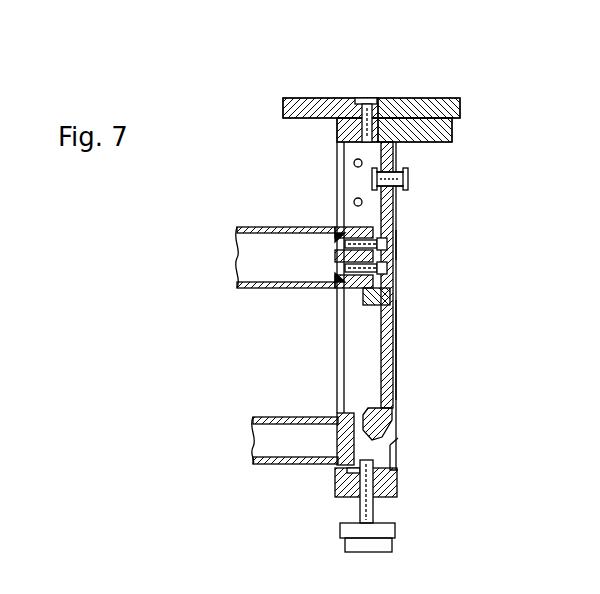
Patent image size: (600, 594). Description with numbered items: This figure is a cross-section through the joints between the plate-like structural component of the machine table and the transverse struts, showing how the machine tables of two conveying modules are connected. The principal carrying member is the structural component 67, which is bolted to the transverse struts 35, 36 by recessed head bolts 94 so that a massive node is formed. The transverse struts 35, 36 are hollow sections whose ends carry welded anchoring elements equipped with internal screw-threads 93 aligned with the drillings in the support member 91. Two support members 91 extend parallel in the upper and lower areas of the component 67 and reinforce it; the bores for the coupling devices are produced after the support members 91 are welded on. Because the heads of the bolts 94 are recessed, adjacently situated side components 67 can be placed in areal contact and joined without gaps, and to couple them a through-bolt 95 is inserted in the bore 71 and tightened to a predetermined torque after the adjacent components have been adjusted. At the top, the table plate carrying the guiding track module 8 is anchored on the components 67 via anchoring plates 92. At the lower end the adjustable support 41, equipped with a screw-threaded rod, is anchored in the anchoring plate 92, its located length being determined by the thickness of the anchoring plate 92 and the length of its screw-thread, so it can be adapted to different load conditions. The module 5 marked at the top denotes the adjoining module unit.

The module 5 is at (298, 90).
The structural component 67 is at (322, 98).
The anchoring plate 92 is at (322, 132).
The adjustable support 41 is at (395, 530).
The internal screw-thread 93 is at (360, 227).
The bore 71 is at (404, 171).
The through-bolt 95 is at (408, 180).
The guiding track module 8 is at (410, 242).
The transverse strut 35 is at (255, 270).
The recessed head bolt 94 is at (398, 255).
The support member 91 is at (366, 310).
The transverse strut 36 is at (295, 437).